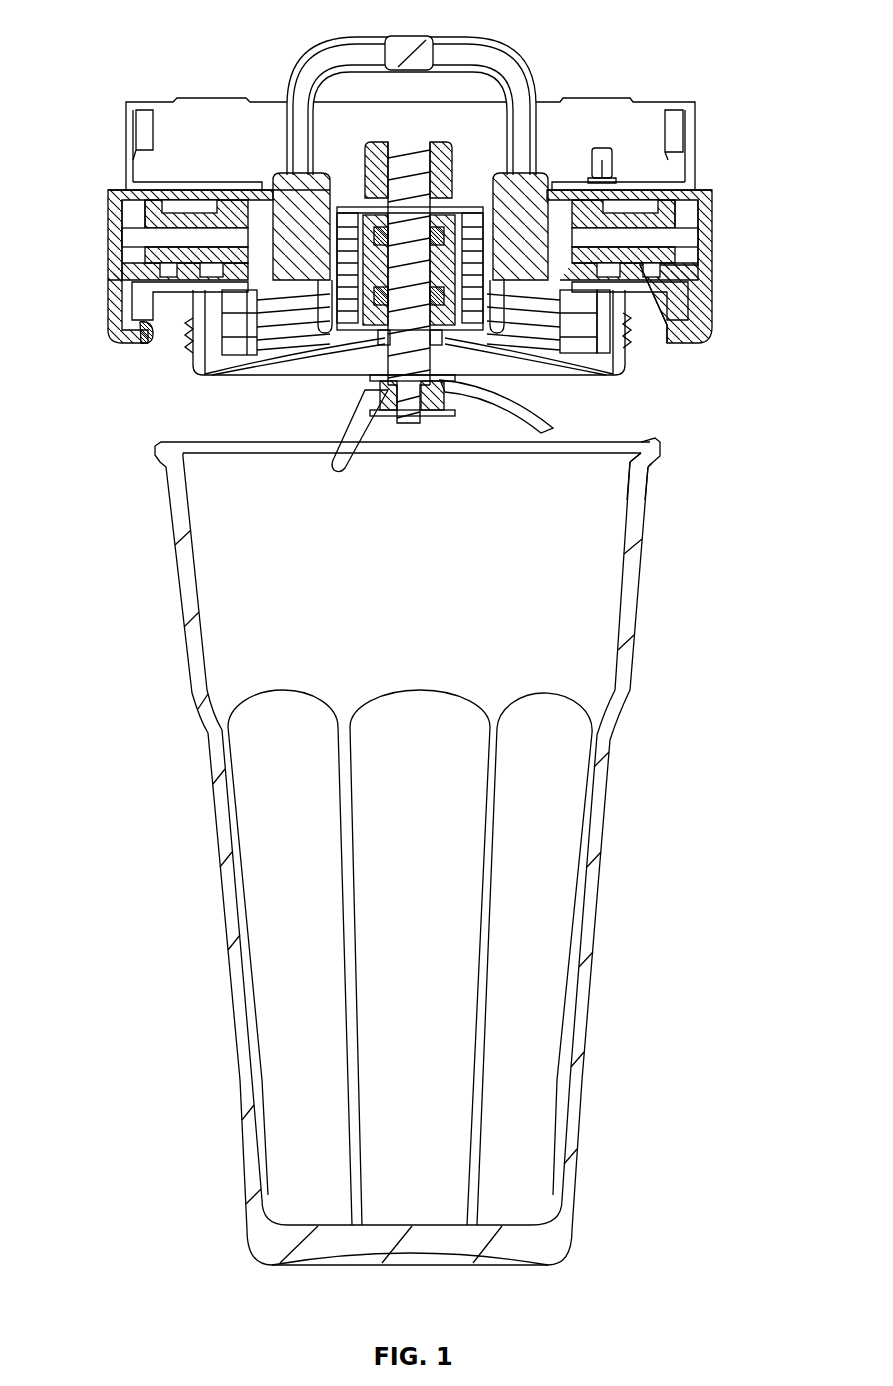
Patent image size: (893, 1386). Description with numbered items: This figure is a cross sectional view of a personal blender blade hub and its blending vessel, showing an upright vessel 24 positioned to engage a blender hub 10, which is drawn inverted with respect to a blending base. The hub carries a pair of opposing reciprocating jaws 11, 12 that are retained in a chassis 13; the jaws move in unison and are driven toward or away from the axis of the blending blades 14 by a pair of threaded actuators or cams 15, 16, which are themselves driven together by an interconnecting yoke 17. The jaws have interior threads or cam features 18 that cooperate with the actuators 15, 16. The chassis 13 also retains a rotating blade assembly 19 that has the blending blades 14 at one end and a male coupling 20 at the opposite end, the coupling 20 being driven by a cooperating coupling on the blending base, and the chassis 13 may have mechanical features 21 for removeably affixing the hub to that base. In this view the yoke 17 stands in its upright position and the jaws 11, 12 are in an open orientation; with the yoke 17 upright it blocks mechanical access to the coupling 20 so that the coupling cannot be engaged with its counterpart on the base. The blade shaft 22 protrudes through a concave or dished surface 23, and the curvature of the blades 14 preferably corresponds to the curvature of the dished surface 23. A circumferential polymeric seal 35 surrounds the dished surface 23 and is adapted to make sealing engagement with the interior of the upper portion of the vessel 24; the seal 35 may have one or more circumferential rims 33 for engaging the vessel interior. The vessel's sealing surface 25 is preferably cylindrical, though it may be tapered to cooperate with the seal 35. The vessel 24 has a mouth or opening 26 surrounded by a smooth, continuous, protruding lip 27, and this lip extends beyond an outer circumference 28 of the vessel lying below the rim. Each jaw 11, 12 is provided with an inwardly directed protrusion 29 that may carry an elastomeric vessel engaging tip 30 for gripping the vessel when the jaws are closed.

The blender hub 10 is at (712, 278).
The reciprocating jaw 11 is at (118, 220).
The reciprocating jaw 12 is at (702, 222).
The chassis 13 is at (697, 147).
The blending blades 14 is at (535, 418).
The threaded actuator or cam 15 is at (247, 213).
The threaded actuator or cam 16 is at (571, 215).
The yoke 17 is at (510, 105).
The interior threads or cam features 18 is at (178, 270).
The rotating blade assembly 19 is at (407, 277).
The male coupling 20 is at (372, 140).
The mechanical features 21 is at (690, 110).
The blade shaft 22 is at (405, 297).
The dished surface 23 is at (540, 358).
The vessel 24 is at (567, 610).
The sealing surface 25 is at (650, 478).
The mouth or opening 26 is at (620, 445).
The protruding lip 27 is at (660, 442).
The outer circumference 28 is at (655, 465).
The inwardly directed protrusion 29 is at (700, 327).
The elastomeric vessel engaging tip 30 is at (158, 334).
The circumferential rim 33 is at (631, 342).
The circumferential polymeric seal 35 is at (193, 337).